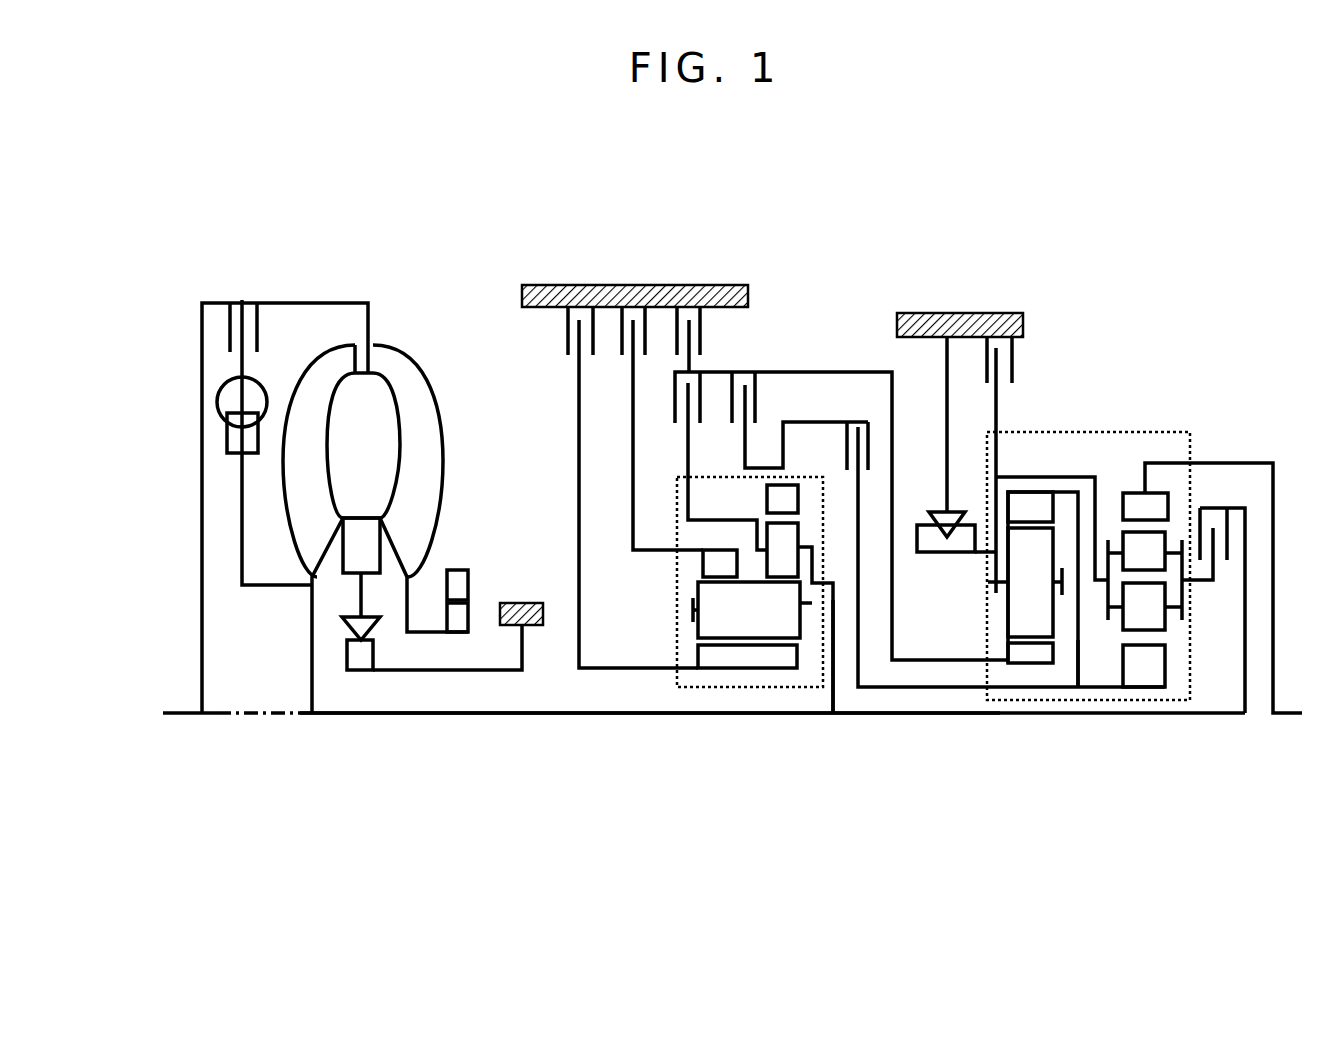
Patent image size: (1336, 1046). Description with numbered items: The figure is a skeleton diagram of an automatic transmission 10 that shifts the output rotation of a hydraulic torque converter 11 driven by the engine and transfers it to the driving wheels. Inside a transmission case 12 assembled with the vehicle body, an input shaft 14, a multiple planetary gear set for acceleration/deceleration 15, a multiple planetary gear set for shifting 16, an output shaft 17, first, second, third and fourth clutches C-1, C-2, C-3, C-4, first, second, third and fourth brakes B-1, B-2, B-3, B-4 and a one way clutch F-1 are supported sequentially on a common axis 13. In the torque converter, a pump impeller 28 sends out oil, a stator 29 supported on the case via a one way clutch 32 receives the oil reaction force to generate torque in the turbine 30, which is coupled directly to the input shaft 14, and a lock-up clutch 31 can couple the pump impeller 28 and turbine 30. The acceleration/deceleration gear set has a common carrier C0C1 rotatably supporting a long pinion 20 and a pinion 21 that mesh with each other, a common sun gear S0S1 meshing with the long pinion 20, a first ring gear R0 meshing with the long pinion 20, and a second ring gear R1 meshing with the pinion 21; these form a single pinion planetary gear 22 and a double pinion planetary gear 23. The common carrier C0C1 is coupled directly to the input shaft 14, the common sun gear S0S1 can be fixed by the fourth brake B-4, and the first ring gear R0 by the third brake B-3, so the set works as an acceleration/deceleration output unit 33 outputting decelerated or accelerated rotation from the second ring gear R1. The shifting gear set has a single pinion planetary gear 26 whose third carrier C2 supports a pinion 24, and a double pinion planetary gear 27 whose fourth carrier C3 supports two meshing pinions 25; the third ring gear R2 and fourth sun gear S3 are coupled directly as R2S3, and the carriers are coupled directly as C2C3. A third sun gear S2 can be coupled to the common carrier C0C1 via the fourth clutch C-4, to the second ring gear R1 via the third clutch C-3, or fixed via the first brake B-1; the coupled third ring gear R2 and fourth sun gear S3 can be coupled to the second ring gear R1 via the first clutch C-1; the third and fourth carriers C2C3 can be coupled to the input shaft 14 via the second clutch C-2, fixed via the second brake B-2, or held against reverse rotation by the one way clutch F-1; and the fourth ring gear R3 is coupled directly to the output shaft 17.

The automatic transmission 10 is at (702, 192).
The hydraulic torque converter 11 is at (362, 492).
The transmission case 12 is at (520, 603).
The common axis 13 is at (240, 716).
The input shaft 14 is at (458, 715).
The multiple planetary gear set for acceleration/deceleration 15 is at (892, 514).
The multiple planetary gear set for shifting 16 is at (1089, 518).
The output shaft 17 is at (1300, 713).
The long pinion 20 is at (710, 622).
The pinion 21 is at (800, 537).
The single pinion planetary gear 22 is at (781, 554).
The double pinion planetary gear 23 is at (802, 733).
The pinion 24 is at (1023, 600).
The pinions 25 is at (1117, 553).
The single pinion planetary gear 26 is at (1062, 647).
The double pinion planetary gear 27 is at (1162, 587).
The pump impeller 28 is at (400, 372).
The stator 29 is at (375, 545).
The turbine 30 is at (313, 395).
The lock-up clutch 31 is at (242, 300).
The one way clutch 32 is at (361, 655).
The acceleration/deceleration output unit 33 is at (783, 755).
The first ring gear R0 is at (700, 565).
The second ring gear R1 is at (800, 492).
The third ring gear R2 is at (1032, 505).
The fourth ring gear R3 is at (1153, 503).
The common sun gear S0S1 is at (738, 658).
The third sun gear S2 is at (1032, 655).
The fourth sun gear S3 is at (1143, 665).
The common carrier C0C1 is at (803, 605).
The third and fourth carriers C2C3 is at (1100, 493).
The third carrier C2 is at (990, 580).
The fourth carrier C3 is at (1185, 585).
The third ring gear and fourth sun gear R2S3 is at (1082, 645).
The first brake B-1 is at (688, 314).
The second brake B-2 is at (1022, 465).
The third brake B-3 is at (658, 403).
The fourth brake B-4 is at (628, 462).
The first clutch C-1 is at (1001, 539).
The second clutch C-2 is at (1213, 596).
The third clutch C-3 is at (800, 420).
The fourth clutch C-4 is at (727, 447).
The one way clutch F-1 is at (956, 460).